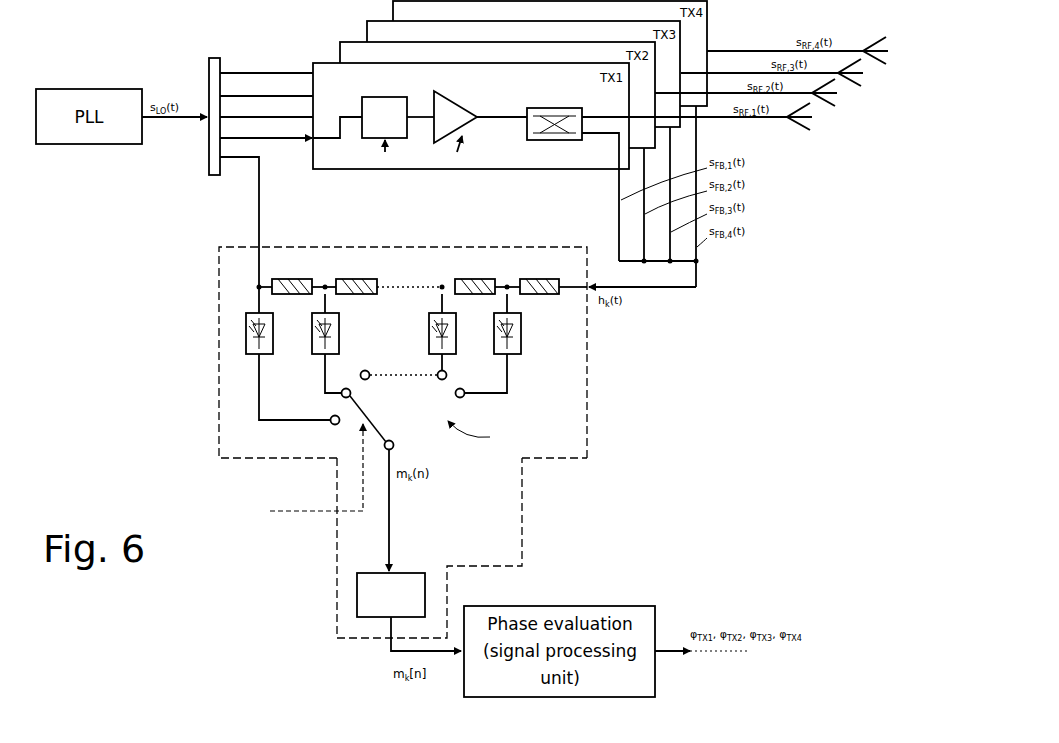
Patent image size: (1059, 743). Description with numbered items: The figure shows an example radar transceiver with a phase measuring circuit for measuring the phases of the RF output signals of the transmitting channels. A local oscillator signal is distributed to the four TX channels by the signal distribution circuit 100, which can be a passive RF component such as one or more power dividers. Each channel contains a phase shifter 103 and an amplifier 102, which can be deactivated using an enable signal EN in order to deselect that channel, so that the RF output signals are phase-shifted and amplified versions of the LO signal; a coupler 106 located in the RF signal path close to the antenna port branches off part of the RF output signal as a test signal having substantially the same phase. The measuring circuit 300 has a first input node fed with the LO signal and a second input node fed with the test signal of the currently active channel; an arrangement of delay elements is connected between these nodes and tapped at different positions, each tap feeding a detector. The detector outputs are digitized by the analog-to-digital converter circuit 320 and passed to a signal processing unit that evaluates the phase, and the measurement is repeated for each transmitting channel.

The signal distribution circuit 100 is at (216, 56).
The amplifier 102 is at (476, 90).
The phase shifter 103 is at (418, 90).
The coupler 106 is at (543, 108).
The measuring circuit 300 is at (217, 393).
The analog-to-digital converter circuit 320 is at (423, 572).